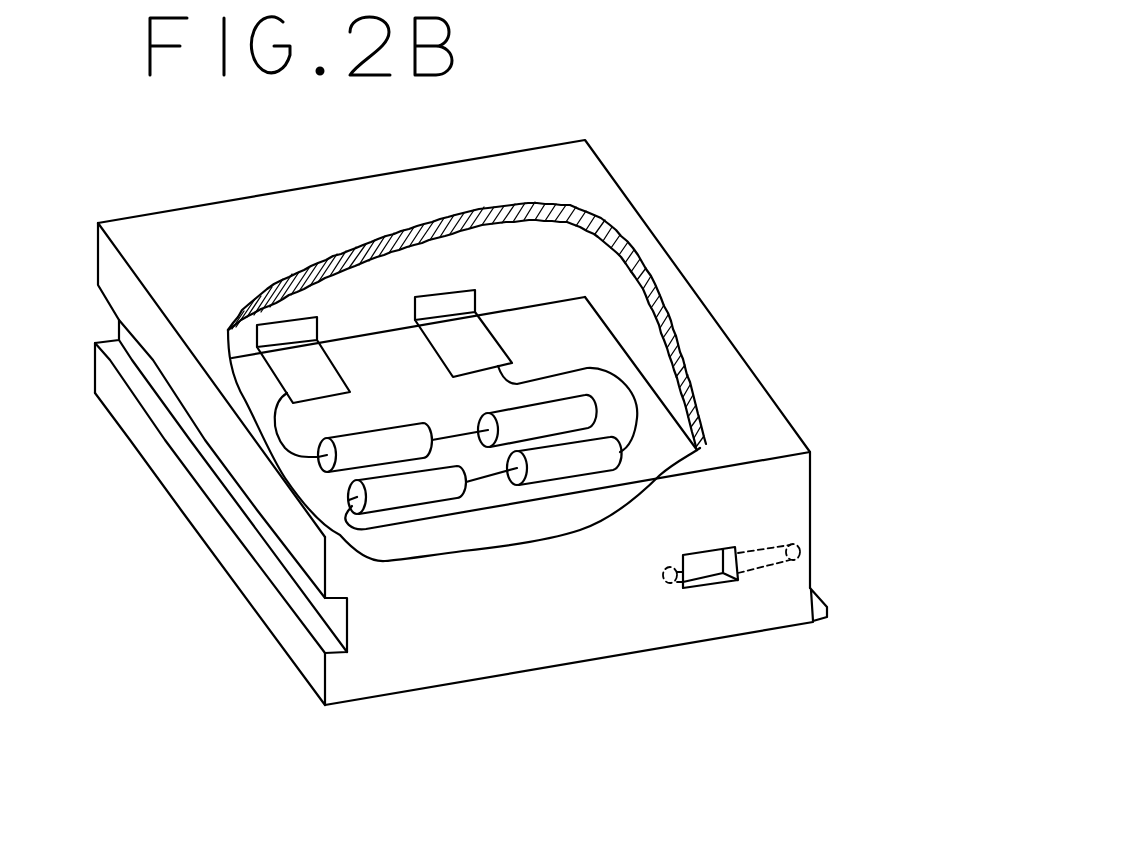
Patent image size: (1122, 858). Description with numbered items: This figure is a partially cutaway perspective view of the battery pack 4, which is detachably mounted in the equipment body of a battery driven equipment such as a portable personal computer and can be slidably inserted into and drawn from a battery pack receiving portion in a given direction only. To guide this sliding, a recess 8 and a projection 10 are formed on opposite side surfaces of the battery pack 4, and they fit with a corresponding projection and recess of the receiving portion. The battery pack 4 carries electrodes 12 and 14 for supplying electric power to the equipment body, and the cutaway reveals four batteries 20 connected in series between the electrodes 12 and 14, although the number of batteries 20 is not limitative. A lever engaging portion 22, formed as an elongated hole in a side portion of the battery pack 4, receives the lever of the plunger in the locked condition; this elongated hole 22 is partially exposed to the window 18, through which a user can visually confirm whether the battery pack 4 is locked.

The battery pack 4 is at (627, 249).
The recess 8 is at (295, 598).
The projection 10 is at (827, 612).
The electrode 12 is at (318, 365).
The electrode 14 is at (468, 338).
The window 18 is at (707, 584).
The batteries 20 is at (412, 492).
The lever engaging portion 22 is at (777, 563).